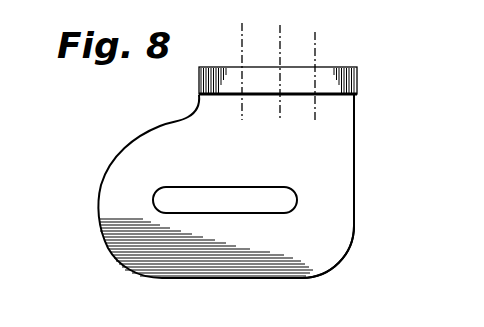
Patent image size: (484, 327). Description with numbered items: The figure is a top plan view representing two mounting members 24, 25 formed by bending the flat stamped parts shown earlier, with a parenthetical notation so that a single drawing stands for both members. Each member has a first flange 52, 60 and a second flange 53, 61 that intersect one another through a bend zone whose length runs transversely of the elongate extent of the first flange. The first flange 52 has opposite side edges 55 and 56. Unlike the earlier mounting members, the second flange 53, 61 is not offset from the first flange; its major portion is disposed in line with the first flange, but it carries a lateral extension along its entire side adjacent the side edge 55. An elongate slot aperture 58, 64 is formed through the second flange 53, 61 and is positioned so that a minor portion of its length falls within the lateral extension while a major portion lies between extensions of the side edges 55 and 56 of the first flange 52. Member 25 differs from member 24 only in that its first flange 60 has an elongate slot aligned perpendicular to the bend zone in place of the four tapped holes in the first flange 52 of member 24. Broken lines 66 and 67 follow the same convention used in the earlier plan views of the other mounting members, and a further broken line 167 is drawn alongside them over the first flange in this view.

The mounting member 24 is at (188, 186).
The mounting member 25 is at (92, 177).
The side edge of first flange 55 is at (198, 80).
The side edge of first flange 56 is at (357, 84).
The first flange 52 is at (315, 160).
The first flange 60 is at (334, 97).
The second flange 53 is at (270, 263).
The second flange 61 is at (311, 275).
The elongate slot aperture 58 is at (181, 241).
The slot 64 is at (180, 207).
The broken line 67 is at (241, 50).
The broken line 66 is at (279, 54).
The axis line 167 is at (316, 50).